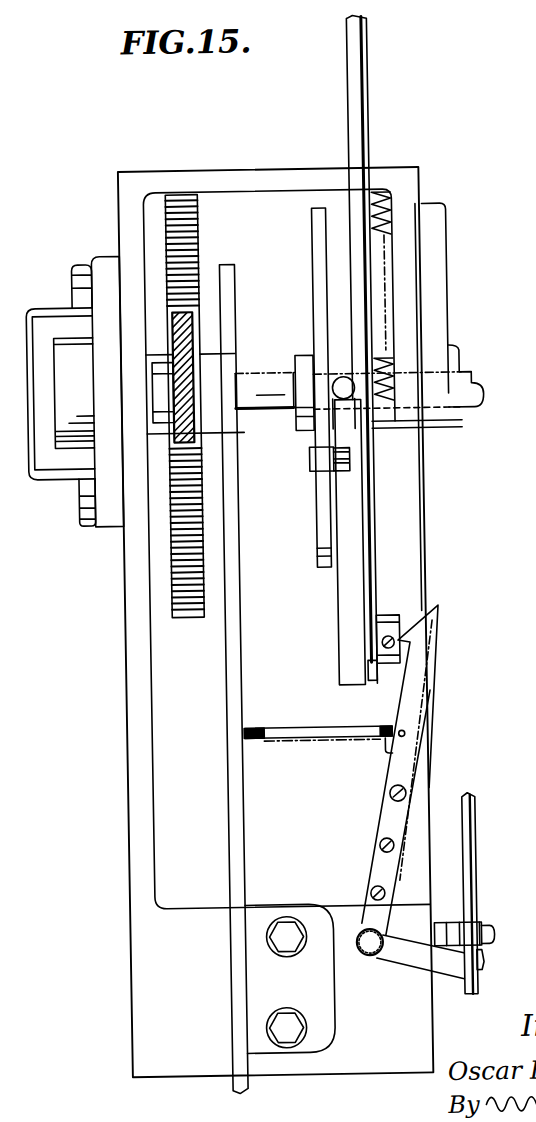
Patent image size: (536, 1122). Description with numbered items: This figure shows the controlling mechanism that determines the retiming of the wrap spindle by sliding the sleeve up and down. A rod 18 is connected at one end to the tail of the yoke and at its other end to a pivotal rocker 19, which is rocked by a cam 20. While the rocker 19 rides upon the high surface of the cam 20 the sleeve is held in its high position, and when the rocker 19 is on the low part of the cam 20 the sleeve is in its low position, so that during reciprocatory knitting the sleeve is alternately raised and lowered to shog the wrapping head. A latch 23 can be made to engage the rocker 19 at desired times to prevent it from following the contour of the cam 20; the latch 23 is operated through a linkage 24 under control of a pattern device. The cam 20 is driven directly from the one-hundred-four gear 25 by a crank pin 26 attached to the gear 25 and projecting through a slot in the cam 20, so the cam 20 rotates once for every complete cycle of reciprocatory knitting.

The rod 18 is at (376, 87).
The pivotal rocker 19 is at (338, 589).
The cam 20 is at (318, 519).
The latch 23 is at (432, 651).
The linkage 24 is at (450, 925).
The gear 25 is at (182, 604).
The crank pin 26 is at (282, 378).